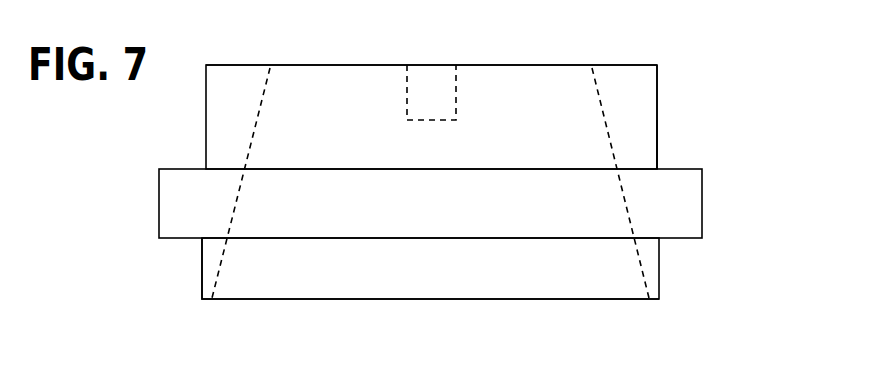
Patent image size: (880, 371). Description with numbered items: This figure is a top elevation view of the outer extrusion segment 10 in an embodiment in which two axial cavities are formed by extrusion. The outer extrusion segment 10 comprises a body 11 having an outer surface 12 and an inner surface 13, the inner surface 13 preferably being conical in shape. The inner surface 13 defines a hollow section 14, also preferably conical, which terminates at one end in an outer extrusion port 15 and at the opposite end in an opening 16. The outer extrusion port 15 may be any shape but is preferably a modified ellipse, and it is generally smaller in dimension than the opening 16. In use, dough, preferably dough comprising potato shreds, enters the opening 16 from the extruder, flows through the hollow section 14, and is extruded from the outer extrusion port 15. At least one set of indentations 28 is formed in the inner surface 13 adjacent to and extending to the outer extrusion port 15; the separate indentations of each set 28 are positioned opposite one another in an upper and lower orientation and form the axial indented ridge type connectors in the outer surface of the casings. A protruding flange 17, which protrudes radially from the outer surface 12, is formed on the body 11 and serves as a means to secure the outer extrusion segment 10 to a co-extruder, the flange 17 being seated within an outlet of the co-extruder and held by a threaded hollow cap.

The outer extrusion segment 10 is at (667, 58).
The body 11 is at (672, 97).
The outer surface 12 is at (660, 140).
The inner surface 13 is at (265, 110).
The hollow section 14 is at (253, 278).
The outer extrusion port 15 is at (341, 65).
The opening 16 is at (592, 303).
The protruding flange 17 is at (707, 177).
The set of indentations 28 is at (427, 87).